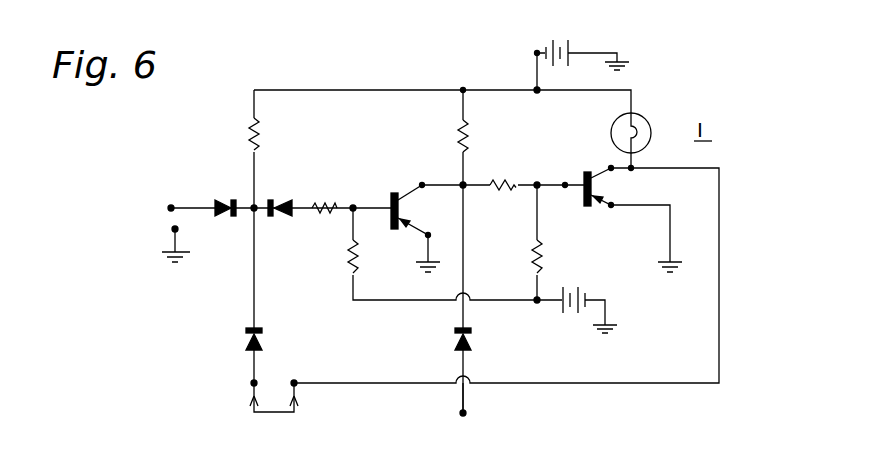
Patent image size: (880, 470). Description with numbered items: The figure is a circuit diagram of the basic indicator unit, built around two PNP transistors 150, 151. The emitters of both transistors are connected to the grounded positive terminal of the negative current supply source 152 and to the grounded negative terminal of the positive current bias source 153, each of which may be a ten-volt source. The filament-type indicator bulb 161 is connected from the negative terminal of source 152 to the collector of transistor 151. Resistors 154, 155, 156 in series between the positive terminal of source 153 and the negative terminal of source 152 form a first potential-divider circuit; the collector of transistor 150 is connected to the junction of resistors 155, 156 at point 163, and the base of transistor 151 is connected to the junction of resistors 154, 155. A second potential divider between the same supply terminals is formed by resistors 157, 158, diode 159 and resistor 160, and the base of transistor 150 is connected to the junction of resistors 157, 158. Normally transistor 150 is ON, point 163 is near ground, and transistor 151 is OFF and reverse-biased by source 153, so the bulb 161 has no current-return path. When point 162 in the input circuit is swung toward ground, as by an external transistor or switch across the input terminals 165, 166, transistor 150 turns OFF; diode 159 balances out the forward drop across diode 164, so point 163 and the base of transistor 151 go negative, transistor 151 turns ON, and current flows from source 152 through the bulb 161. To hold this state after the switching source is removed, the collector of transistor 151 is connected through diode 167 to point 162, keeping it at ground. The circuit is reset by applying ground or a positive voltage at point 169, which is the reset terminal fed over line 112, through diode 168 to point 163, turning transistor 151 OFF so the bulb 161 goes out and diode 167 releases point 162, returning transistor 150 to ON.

The line 112 is at (463, 402).
The PNP transistor 150 is at (390, 201).
The PNP transistor 151 is at (596, 173).
The negative current supply source 152 is at (569, 46).
The positive current bias source 153 is at (588, 290).
The resistor 154 is at (535, 248).
The resistor 155 is at (508, 190).
The resistor 156 is at (460, 128).
The resistor 157 is at (349, 262).
The resistor 158 is at (337, 200).
The diode 159 is at (281, 218).
The resistor 160 is at (249, 132).
The indicator bulb 161 is at (645, 118).
The point 162 is at (251, 211).
The point 163 is at (460, 188).
The diode 164 is at (222, 200).
The input terminal 165 is at (168, 209).
The input terminal 166 is at (172, 232).
The diode 167 is at (244, 342).
The diode 168 is at (453, 343).
The reset terminal 169 is at (461, 415).